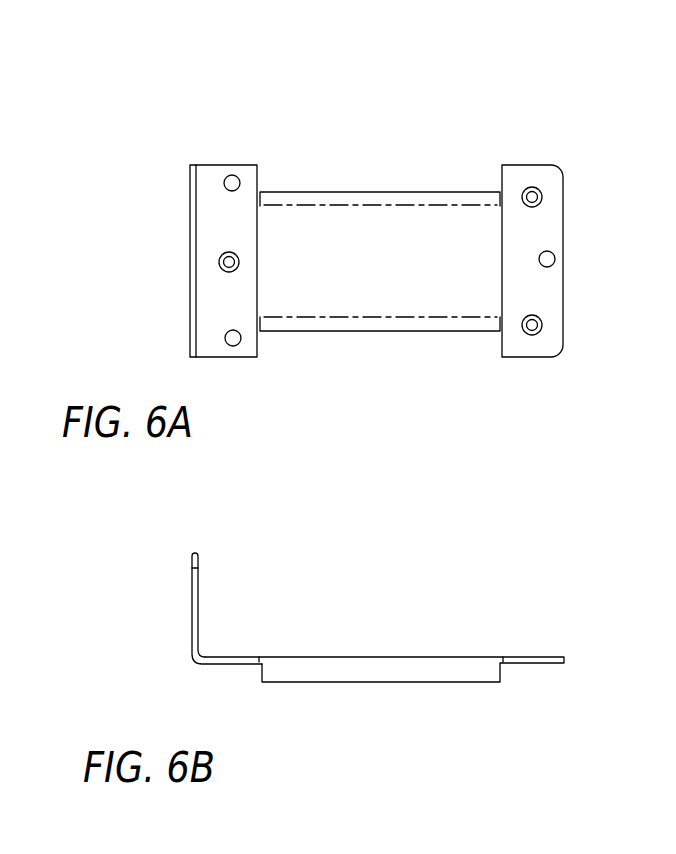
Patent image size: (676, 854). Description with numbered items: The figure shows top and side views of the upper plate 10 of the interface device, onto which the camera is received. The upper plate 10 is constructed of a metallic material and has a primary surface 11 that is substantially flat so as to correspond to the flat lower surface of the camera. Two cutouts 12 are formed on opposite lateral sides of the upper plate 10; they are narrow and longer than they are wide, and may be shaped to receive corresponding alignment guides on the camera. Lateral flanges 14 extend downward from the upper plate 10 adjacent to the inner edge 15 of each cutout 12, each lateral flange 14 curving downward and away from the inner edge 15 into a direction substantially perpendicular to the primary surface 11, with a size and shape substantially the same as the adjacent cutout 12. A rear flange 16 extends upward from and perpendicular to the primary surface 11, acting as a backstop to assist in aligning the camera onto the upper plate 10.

In FIG. 6A, the upper plate 10 is at (350, 252).
In FIG. 6B, the upper plate 10 is at (378, 625).
In FIG. 6A, the primary surface 11 is at (405, 293).
In FIG. 6A, the cutouts 12 is at (380, 143).
In FIG. 6B, the lateral flanges 14 is at (438, 684).
In FIG. 6A, the inner edge 15 is at (460, 190).
In FIG. 6A, the rear flange 16 is at (190, 235).
In FIG. 6B, the rear flange 16 is at (198, 588).